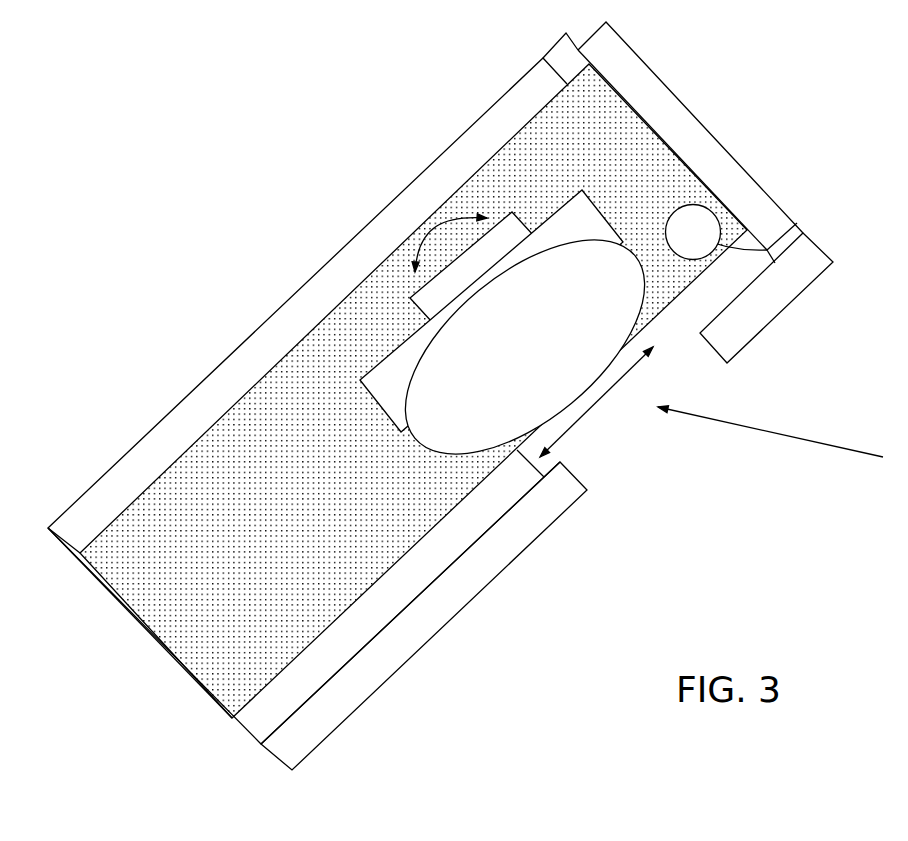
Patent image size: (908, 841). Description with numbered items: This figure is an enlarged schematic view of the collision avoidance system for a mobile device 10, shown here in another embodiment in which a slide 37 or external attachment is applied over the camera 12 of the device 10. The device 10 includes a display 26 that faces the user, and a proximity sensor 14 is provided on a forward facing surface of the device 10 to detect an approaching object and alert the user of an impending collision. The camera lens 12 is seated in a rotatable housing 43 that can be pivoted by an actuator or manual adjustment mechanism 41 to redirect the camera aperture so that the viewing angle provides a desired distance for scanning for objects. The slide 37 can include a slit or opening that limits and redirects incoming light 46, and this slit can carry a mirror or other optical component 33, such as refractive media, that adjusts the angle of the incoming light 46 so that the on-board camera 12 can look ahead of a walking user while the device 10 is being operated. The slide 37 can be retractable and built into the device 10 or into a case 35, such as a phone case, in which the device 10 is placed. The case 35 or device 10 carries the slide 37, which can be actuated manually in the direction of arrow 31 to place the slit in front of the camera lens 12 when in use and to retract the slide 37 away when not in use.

The mobile device 10 is at (187, 586).
The camera 12 is at (583, 335).
The proximity sensor 14 is at (798, 222).
The display 26 is at (213, 377).
The arrow 31 is at (573, 427).
The optical component 33 is at (355, 632).
The case 35 is at (635, 90).
The slide 37 is at (515, 493).
The actuator or manual adjustment mechanism 41 is at (432, 300).
The rotatable housing 43 is at (405, 360).
The incoming light 46 is at (822, 443).